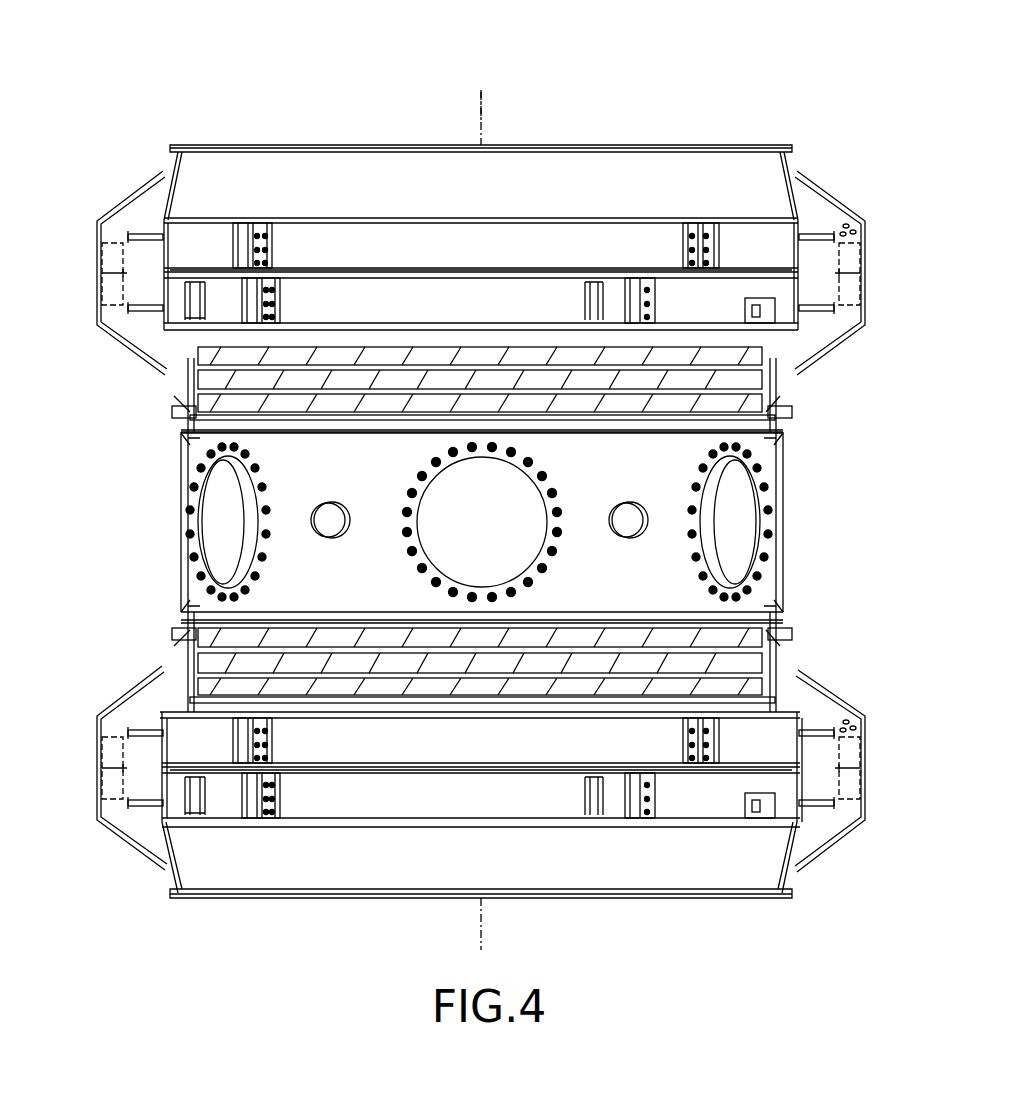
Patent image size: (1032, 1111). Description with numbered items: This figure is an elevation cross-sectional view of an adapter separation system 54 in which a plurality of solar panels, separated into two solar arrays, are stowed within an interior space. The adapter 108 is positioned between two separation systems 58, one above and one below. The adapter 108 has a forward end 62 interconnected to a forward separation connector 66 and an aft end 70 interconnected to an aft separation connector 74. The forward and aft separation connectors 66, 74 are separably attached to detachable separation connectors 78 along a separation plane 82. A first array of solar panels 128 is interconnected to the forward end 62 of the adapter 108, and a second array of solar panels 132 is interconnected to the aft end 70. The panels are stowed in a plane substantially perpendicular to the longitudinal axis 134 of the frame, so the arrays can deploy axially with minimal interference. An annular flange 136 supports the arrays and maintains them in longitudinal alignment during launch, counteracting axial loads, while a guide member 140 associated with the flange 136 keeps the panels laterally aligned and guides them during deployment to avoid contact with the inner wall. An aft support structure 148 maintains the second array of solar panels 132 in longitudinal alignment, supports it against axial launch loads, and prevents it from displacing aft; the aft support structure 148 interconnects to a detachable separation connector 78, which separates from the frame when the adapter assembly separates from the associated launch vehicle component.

The adapter separation system 54 is at (748, 88).
The separation system 58 is at (78, 142).
The forward end 62 is at (775, 442).
The forward separation connector 66 is at (790, 392).
The aft end 70 is at (790, 610).
The aft separation connector 74 is at (790, 655).
The detachable separation connector 78 is at (796, 172).
The separation plane 82 is at (722, 270).
The adapter 108 is at (78, 400).
The first array of solar panels 128 is at (840, 330).
The second array of solar panels 132 is at (805, 678).
The longitudinal axis 134 is at (482, 97).
The annular flange 136 is at (785, 470).
The guide member 140 is at (795, 368).
The aft support structure 148 is at (162, 668).